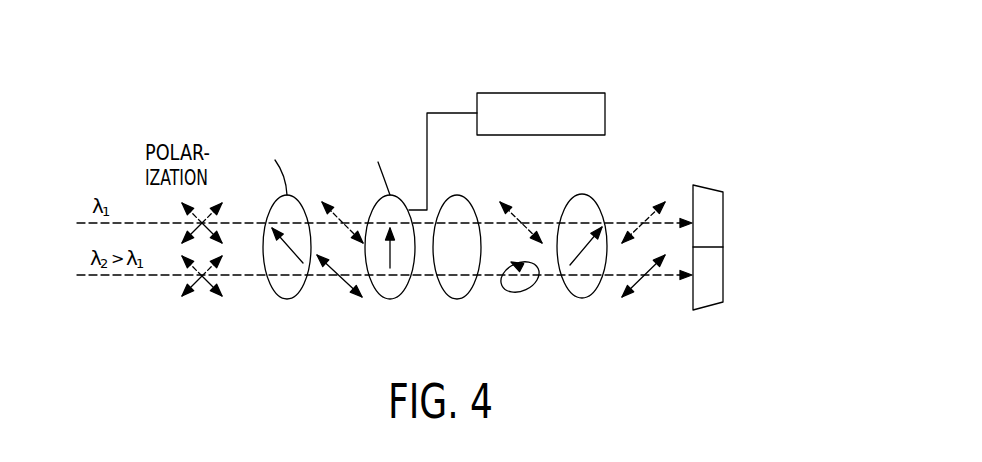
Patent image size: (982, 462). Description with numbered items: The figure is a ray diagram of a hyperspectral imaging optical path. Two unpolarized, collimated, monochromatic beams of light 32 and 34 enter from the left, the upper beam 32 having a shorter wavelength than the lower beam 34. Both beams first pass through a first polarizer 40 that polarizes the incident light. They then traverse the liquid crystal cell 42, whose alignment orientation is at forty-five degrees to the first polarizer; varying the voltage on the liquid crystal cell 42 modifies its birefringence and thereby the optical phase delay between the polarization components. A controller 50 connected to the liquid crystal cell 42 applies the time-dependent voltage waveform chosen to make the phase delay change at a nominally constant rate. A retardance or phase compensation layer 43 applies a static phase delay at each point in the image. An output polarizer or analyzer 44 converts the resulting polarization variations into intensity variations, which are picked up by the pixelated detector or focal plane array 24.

The pixelated detector 24 is at (723, 202).
The shorter wavelength beam 32 is at (131, 221).
The longer wavelength beam 34 is at (123, 277).
The first polarizer 40 is at (288, 299).
The liquid crystal cell 42 is at (390, 299).
The compensation layer 43 is at (457, 299).
The analyzer 44 is at (582, 298).
The controller 50 is at (605, 108).